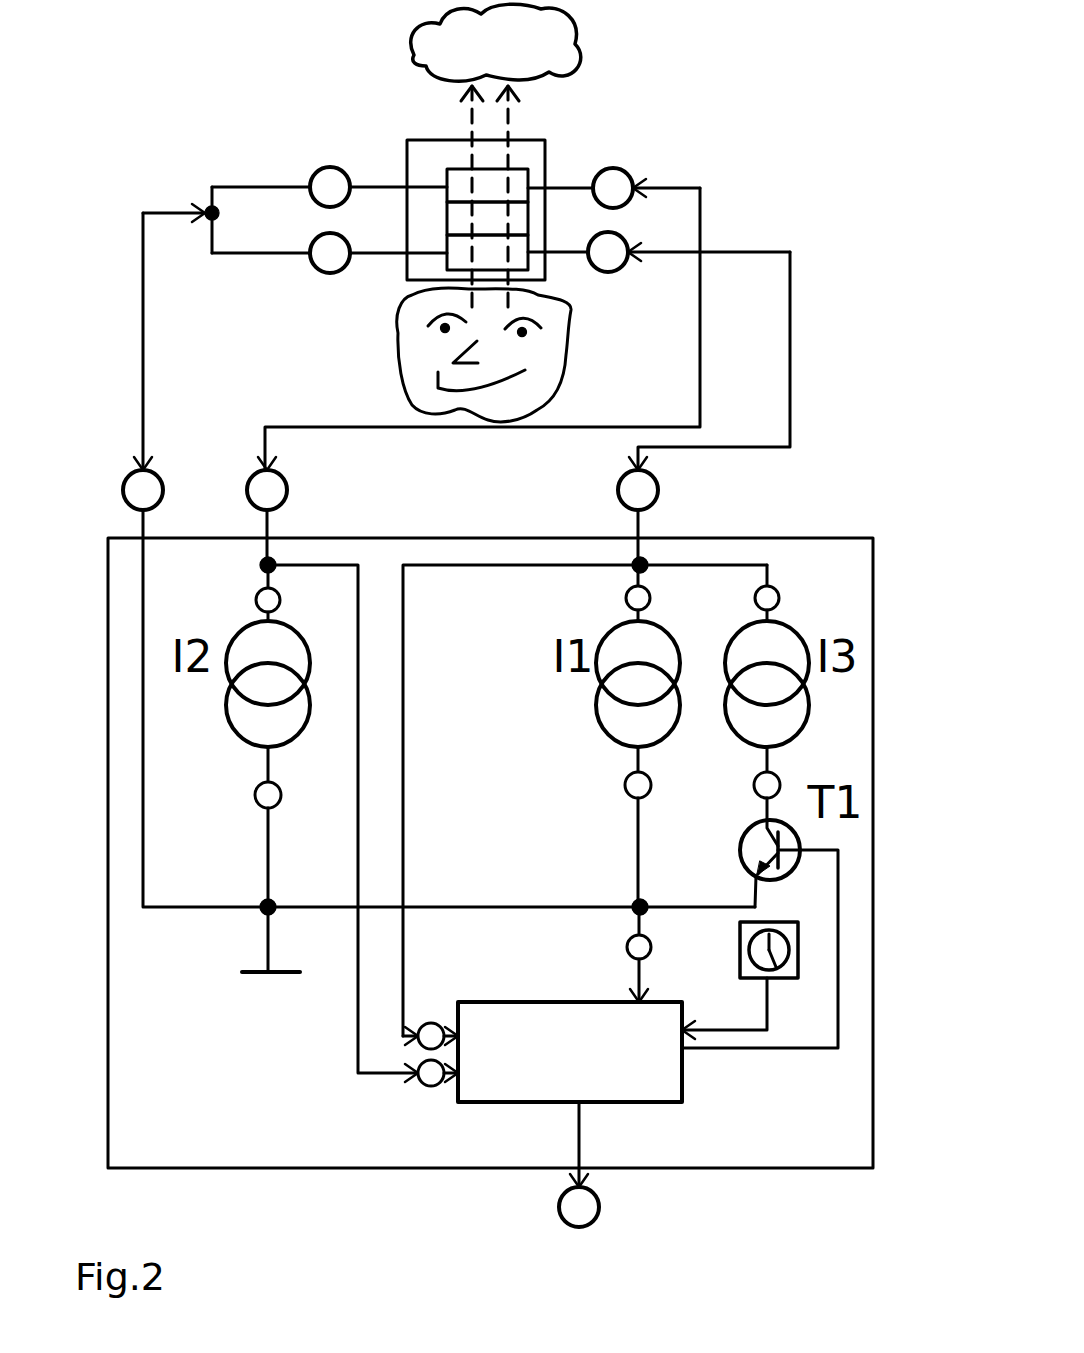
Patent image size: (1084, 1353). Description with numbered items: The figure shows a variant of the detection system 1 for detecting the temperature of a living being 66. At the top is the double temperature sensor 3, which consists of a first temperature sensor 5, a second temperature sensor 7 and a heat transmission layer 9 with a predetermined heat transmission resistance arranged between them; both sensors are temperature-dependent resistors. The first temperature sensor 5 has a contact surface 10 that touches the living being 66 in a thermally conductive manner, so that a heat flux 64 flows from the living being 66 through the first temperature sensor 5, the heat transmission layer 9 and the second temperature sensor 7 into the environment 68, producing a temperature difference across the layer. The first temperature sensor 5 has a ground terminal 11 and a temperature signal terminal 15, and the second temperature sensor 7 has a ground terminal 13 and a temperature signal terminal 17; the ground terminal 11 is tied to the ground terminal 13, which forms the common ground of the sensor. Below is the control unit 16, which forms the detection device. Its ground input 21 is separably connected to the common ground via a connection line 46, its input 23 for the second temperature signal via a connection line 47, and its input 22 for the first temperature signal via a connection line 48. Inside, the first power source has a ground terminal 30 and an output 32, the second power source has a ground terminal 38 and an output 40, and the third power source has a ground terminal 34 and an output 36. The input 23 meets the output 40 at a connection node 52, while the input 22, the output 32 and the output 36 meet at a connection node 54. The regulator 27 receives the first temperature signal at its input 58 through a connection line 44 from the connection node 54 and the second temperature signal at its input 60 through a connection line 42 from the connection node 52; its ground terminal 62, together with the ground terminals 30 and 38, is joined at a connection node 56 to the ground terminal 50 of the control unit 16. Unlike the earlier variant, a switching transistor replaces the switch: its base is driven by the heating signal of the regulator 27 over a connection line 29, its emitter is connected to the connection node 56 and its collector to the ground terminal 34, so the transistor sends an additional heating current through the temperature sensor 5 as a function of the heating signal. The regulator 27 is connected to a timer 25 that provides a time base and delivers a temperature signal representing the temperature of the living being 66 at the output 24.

The detection system 1 is at (807, 147).
The double temperature sensor 3 is at (546, 163).
The first temperature sensor 5 is at (443, 271).
The second temperature sensor 7 is at (457, 167).
The heat transmission layer 9 is at (447, 217).
The contact surface 10 is at (531, 269).
The ground terminal 11 is at (315, 275).
The ground terminal 13 is at (313, 170).
The temperature signal terminal 15 is at (627, 233).
The control unit 16 is at (810, 537).
The temperature signal terminal 17 is at (617, 168).
The ground input 21 is at (163, 473).
The input for a first temperature signal 22 is at (660, 492).
The input for a second temperature signal 23 is at (287, 497).
The output 24 is at (601, 1207).
The timer 25 is at (740, 967).
The regulator 27 is at (685, 1088).
The connection line 29 is at (795, 1047).
The ground terminal 30 is at (624, 790).
The output 32 is at (625, 602).
The ground terminal 34 is at (778, 776).
The output 36 is at (779, 605).
The ground terminal 38 is at (281, 795).
The output 40 is at (281, 598).
The connection line 42 is at (359, 767).
The connection line 44 is at (404, 730).
The connection line 46 is at (168, 218).
The connection line 47 is at (701, 320).
The connection line 48 is at (791, 354).
The ground terminal 50 is at (262, 946).
The connection node 52 is at (260, 565).
The connection node 54 is at (645, 555).
The connection node 56 is at (632, 901).
The input for a first temperature signal 58 is at (433, 1023).
The input for a second temperature signal 60 is at (428, 1088).
The ground terminal 62 is at (627, 955).
The heat flux 64 is at (510, 124).
The living being 66 is at (400, 358).
The environment 68 is at (496, 42).